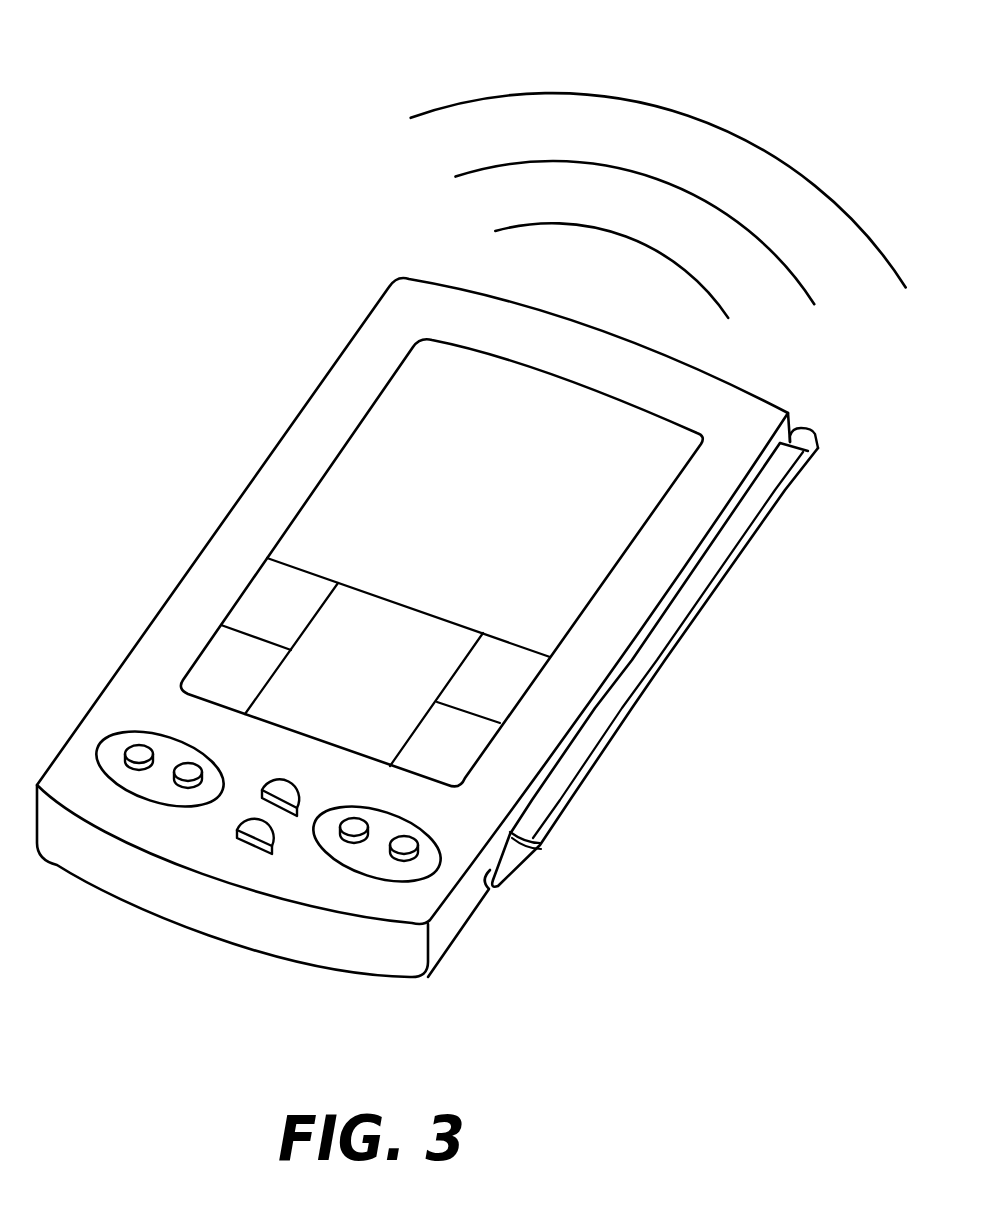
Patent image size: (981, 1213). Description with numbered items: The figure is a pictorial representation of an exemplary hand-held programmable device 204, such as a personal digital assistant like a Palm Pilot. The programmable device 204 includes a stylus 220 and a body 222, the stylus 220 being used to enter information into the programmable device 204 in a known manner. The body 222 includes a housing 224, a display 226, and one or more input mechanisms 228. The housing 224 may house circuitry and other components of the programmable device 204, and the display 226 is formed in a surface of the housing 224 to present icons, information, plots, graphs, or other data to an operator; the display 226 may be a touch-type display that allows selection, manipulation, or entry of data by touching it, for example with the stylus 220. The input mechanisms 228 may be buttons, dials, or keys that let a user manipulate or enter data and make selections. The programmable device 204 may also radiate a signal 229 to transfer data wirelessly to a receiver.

The programmable device 204 is at (156, 358).
The stylus 220 is at (572, 762).
The body 222 is at (274, 978).
The housing 224 is at (257, 496).
The display 226 is at (641, 498).
The input mechanisms 228 is at (267, 790).
The signal 229 is at (478, 78).